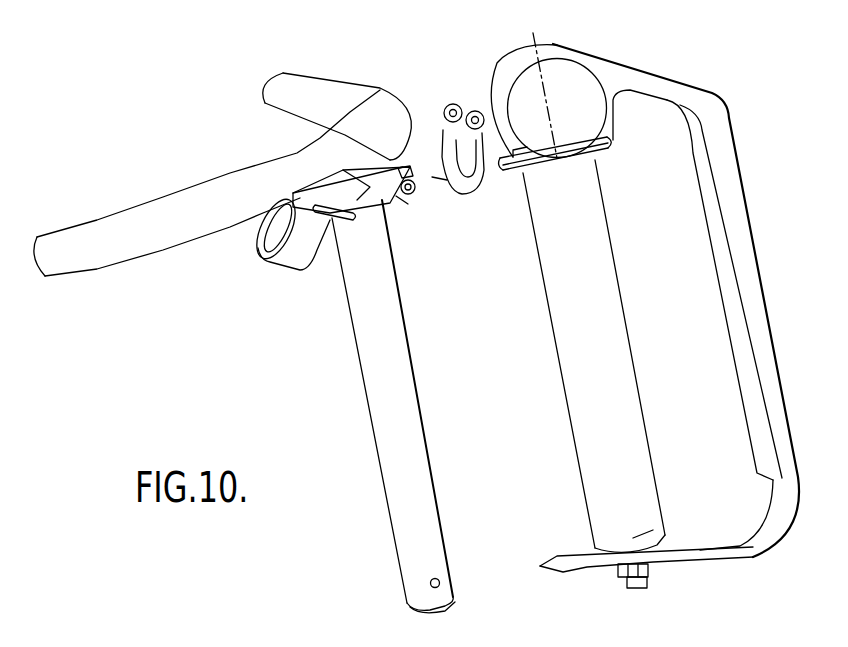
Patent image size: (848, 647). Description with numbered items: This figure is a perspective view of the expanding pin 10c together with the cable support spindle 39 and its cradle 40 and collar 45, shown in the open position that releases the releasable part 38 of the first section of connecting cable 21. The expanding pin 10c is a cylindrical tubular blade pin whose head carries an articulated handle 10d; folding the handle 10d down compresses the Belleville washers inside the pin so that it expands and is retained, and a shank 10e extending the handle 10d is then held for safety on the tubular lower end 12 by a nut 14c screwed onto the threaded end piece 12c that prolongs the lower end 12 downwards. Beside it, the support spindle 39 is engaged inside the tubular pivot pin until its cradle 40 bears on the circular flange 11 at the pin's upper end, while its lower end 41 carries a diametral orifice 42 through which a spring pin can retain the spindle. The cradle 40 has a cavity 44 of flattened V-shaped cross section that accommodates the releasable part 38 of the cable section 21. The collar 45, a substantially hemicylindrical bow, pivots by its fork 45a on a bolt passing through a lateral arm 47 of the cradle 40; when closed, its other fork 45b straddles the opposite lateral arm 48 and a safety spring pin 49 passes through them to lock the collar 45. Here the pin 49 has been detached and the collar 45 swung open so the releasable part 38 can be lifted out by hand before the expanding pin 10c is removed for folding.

The first section of connecting cable 21 is at (88, 218).
The releasable part 38 is at (350, 107).
The cavity 44 is at (368, 188).
The lateral arm 47 is at (398, 178).
The fork 45b is at (470, 116).
The collar 45 is at (468, 190).
The fork 45a is at (414, 194).
The cradle 40 is at (400, 200).
The safety spring pin 49 is at (257, 246).
The lateral arm 48 is at (290, 245).
The cable support spindle 39 is at (385, 370).
The lower end 41 is at (410, 560).
The diametral orifice 42 is at (440, 582).
The circular flange 11 is at (603, 150).
The handle 10d is at (720, 152).
The shank 10e is at (767, 530).
The tubular lower end 12 is at (637, 540).
The expanding pin 10c is at (632, 297).
The nut 14c is at (620, 572).
The threaded end piece 12c is at (641, 585).